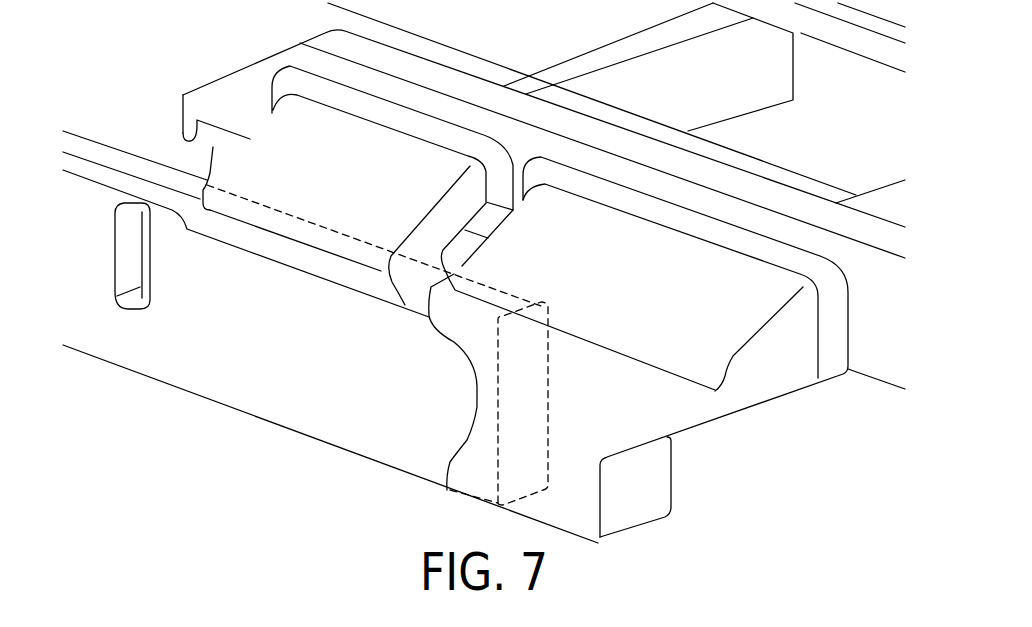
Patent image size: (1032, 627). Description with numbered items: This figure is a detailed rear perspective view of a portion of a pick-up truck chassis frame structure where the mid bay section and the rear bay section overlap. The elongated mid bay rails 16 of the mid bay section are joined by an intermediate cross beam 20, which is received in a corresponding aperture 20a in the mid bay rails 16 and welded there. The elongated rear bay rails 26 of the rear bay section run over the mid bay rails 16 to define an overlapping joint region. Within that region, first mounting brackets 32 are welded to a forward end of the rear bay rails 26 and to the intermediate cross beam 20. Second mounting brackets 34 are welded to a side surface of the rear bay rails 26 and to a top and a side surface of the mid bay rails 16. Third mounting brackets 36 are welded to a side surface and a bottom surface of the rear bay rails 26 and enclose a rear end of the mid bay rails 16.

The elongated mid bay rails 16 is at (317, 397).
The intermediate cross beam 20 is at (664, 37).
The aperture 20a is at (123, 252).
The elongated rear bay rails 26 is at (422, 63).
The first mounting brackets 32 is at (215, 145).
The second mounting brackets 34 is at (270, 133).
The third mounting brackets 36 is at (478, 403).